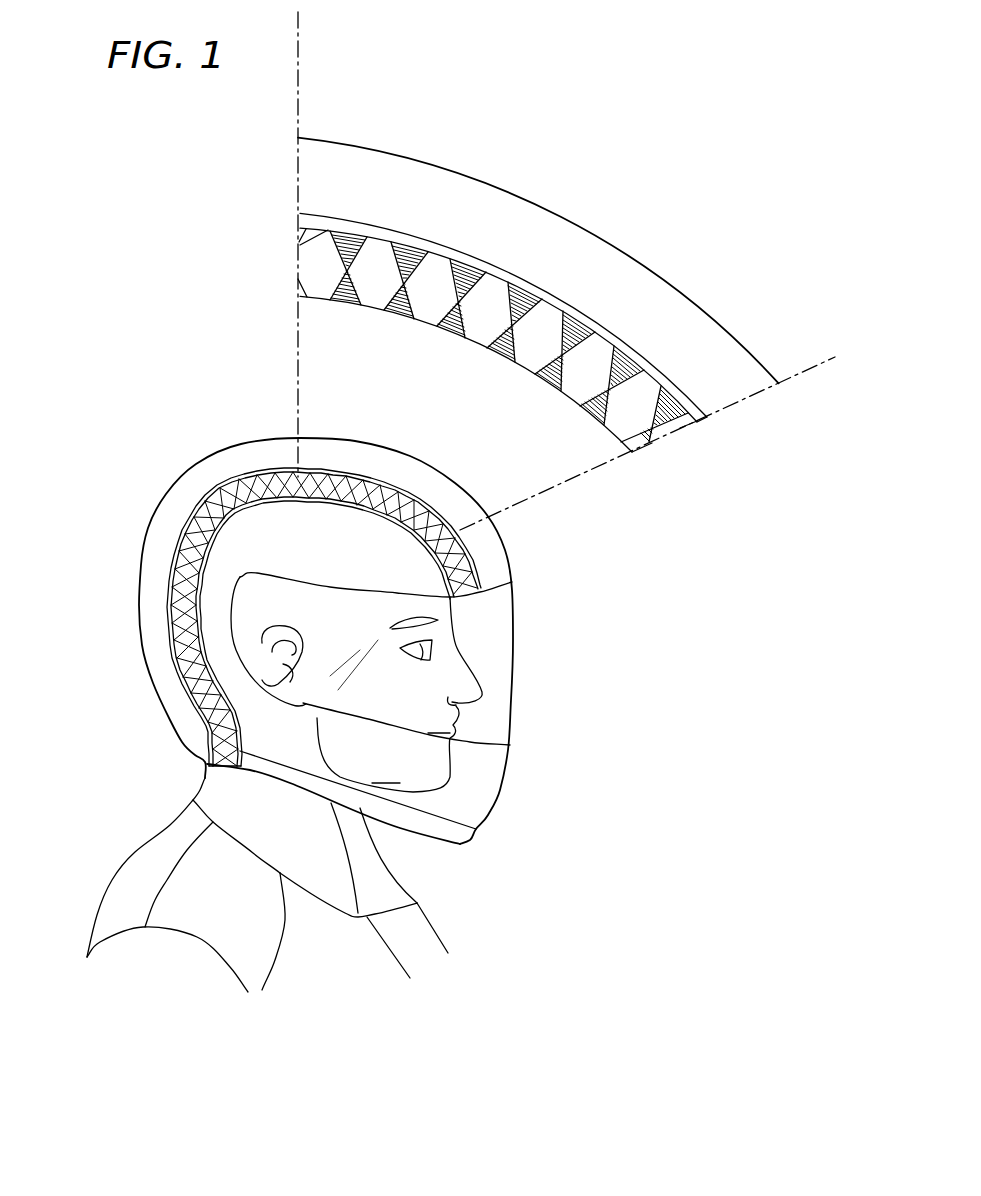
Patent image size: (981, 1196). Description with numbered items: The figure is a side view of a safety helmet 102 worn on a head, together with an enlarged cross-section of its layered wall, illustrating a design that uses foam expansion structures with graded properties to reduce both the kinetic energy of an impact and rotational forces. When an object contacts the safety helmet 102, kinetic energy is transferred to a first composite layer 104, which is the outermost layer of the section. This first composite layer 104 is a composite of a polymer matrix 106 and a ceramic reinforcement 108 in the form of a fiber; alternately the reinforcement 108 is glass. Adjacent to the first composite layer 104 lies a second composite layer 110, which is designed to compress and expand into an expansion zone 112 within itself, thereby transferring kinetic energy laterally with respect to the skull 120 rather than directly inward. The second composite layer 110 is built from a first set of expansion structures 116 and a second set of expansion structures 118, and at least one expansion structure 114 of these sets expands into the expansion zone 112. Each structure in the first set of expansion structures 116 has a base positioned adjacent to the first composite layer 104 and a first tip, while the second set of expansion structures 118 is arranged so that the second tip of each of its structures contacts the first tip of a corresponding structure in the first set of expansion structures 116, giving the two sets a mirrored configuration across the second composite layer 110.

The safety helmet 102 is at (211, 464).
The first composite layer 104 is at (297, 137).
The polymer matrix 106 is at (742, 402).
The ceramic reinforcement 108 is at (700, 422).
The second composite layer 110 is at (297, 228).
The expansion zone 112 is at (485, 320).
The expansion structure 114 is at (510, 363).
The first set of expansion structures 116 is at (682, 437).
The second set of expansion structures 118 is at (650, 447).
The skull 120 is at (220, 657).